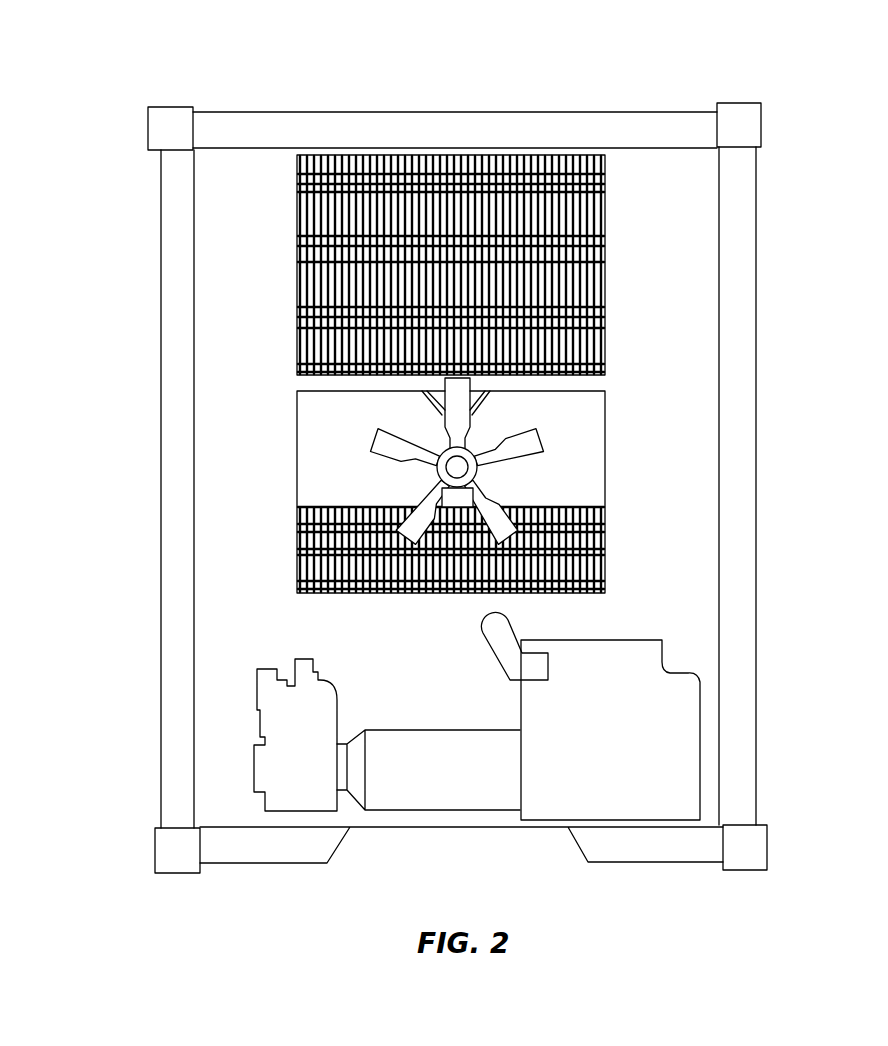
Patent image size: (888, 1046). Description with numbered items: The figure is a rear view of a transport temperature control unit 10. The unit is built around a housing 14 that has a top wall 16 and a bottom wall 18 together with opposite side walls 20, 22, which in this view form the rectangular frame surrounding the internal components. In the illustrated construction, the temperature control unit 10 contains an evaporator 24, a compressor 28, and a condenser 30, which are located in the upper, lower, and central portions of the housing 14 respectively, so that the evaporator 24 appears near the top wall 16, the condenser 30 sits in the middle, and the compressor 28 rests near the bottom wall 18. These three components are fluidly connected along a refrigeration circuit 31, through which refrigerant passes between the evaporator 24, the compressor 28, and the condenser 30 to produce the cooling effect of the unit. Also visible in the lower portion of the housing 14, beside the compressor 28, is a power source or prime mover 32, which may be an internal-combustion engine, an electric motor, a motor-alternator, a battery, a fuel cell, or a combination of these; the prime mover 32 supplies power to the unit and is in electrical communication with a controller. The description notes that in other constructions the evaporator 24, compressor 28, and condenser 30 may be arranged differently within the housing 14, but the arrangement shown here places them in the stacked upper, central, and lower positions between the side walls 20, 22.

The temperature control unit 10 is at (790, 116).
The housing 14 is at (757, 167).
The top wall 16 is at (378, 112).
The bottom wall 18 is at (350, 828).
The side wall 20 is at (160, 280).
The side wall 22 is at (757, 542).
The evaporator 24 is at (297, 318).
The compressor 28 is at (297, 802).
The condenser 30 is at (567, 507).
The refrigeration circuit 31 is at (620, 286).
The prime mover 32 is at (677, 710).